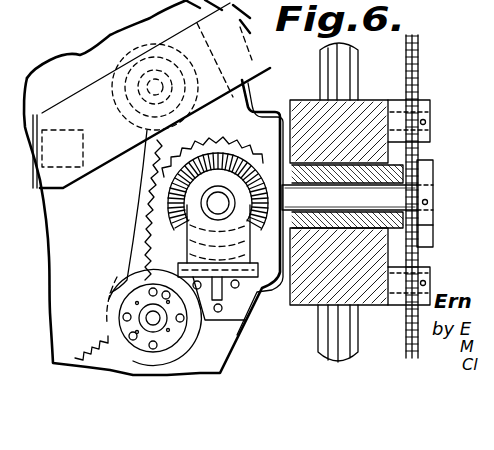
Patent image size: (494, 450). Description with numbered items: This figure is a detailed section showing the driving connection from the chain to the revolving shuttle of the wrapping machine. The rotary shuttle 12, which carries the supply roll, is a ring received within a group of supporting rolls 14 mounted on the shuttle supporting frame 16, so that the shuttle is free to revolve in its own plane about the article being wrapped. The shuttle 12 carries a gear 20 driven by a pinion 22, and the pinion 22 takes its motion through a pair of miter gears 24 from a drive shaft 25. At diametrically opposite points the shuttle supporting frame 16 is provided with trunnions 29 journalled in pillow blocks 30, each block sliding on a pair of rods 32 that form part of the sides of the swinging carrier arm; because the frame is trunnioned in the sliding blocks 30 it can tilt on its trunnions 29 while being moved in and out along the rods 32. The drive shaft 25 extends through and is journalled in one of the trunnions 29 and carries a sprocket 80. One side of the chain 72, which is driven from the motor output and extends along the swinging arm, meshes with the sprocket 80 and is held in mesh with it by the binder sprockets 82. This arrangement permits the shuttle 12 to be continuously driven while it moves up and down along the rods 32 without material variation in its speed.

The rotary shuttle 12 is at (73, 67).
The supporting rolls 14 is at (188, 122).
The shuttle supporting frame 16 is at (252, 100).
The gear 20 is at (112, 68).
The pinion 22 is at (148, 245).
The miter gears 24 is at (240, 152).
The drive shaft 25 is at (417, 225).
The trunnions 29 is at (417, 163).
The pillow blocks 30 is at (367, 103).
The rods 32 is at (350, 67).
The chain 72 is at (420, 57).
The sprocket 80 is at (430, 190).
The binder sprockets 82 is at (420, 100).